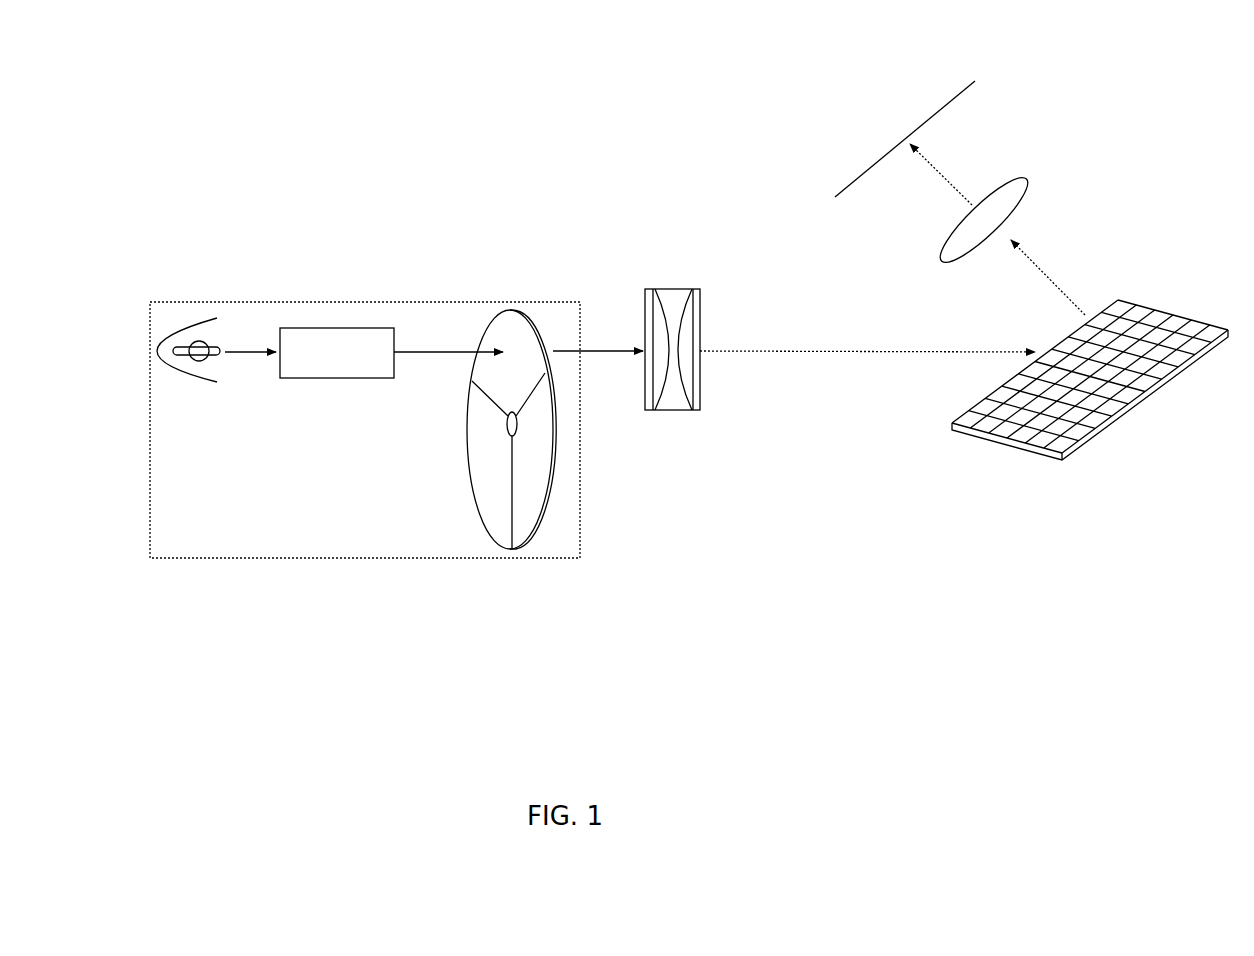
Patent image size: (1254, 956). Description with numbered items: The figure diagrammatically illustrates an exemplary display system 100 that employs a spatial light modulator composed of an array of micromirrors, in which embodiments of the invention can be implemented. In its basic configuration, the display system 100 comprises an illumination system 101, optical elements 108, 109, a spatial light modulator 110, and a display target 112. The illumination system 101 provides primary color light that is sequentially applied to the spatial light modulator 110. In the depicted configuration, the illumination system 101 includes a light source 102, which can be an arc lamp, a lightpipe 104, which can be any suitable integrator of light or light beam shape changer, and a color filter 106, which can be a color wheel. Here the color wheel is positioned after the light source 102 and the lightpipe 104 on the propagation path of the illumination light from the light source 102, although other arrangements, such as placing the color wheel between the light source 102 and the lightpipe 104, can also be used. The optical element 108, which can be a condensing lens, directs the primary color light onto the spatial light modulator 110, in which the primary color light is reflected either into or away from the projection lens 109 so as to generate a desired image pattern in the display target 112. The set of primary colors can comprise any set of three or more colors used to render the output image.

The display system 100 is at (524, 184).
The illumination system 101 is at (365, 558).
The light source 102 is at (189, 311).
The lightpipe 104 is at (337, 327).
The color filter 106 is at (525, 312).
The optical element 108 is at (672, 283).
The projection lens 109 is at (1022, 177).
The spatial light modulator 110 is at (1139, 292).
The display target 112 is at (953, 93).